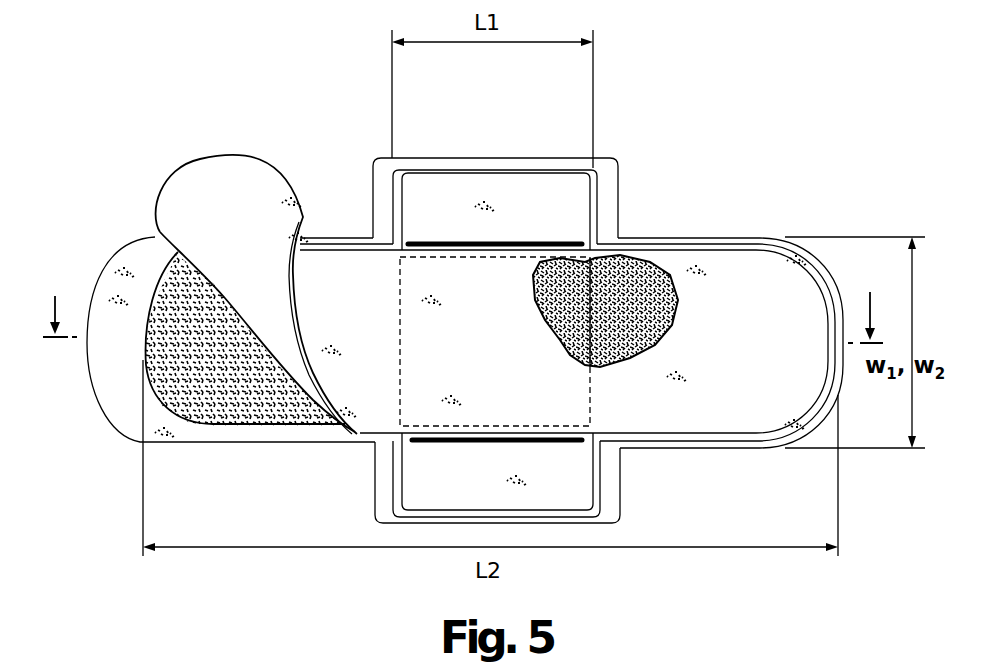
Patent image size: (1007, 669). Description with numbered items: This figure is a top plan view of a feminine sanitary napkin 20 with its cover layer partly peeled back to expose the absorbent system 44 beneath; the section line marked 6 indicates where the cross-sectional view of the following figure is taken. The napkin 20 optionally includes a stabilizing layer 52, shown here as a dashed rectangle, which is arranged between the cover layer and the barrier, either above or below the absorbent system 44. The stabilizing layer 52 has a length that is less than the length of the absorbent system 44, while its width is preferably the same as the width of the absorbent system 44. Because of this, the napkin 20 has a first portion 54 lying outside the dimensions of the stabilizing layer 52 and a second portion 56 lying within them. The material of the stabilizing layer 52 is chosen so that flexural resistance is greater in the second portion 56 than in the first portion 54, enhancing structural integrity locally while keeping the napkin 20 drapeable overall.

The sanitary napkin 20 is at (152, 88).
The absorbent system 44 is at (223, 393).
The stabilizing layer 52 is at (430, 273).
The first portion 54 is at (337, 278).
The second portion 56 is at (499, 276).
The section line 6- 6 is at (463, 294).